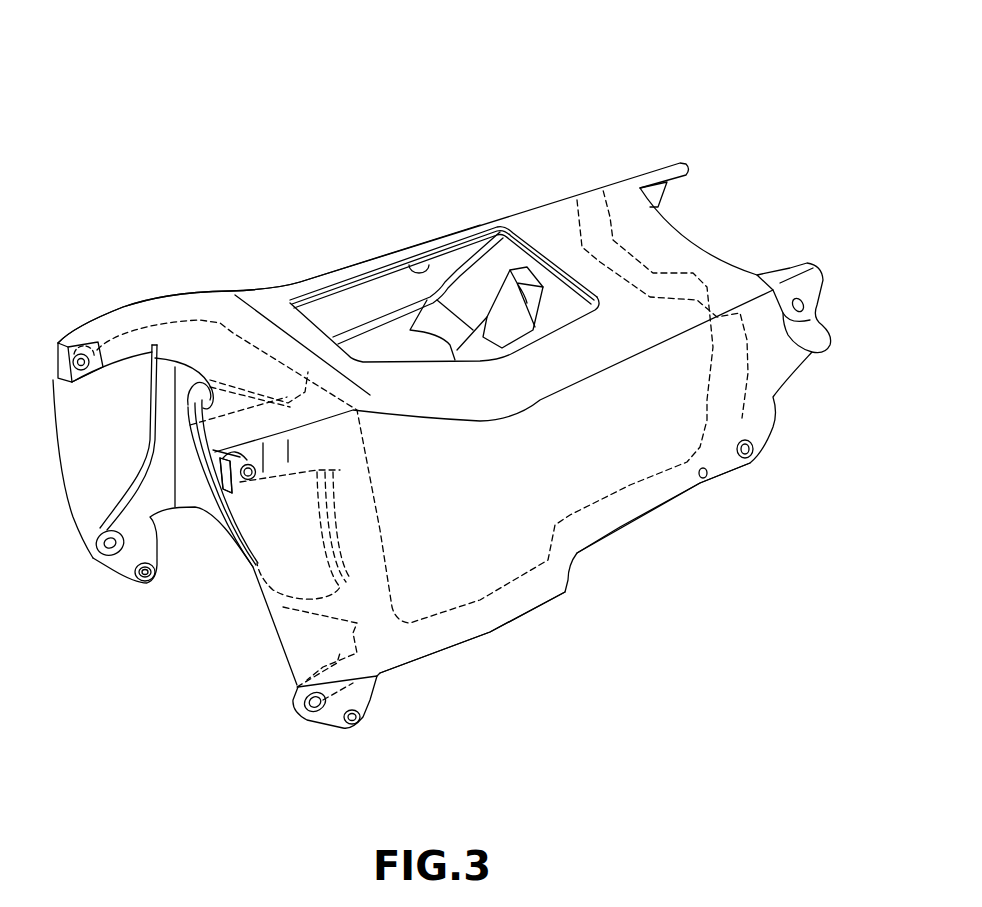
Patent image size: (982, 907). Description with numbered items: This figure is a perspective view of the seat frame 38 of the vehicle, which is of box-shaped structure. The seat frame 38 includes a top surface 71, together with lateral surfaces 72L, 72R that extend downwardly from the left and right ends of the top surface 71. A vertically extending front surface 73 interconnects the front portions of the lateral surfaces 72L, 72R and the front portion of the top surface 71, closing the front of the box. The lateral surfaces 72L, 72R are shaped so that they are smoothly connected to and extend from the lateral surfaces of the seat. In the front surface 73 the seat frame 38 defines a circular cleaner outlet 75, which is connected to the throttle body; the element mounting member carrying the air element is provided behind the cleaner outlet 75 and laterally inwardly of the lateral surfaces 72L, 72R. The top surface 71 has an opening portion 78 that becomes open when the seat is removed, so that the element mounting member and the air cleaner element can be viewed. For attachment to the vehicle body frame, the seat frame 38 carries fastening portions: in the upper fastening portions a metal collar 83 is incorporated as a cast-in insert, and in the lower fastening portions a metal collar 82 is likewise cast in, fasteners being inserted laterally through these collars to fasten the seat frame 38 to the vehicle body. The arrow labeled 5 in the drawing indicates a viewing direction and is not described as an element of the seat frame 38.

The seat frame 38 is at (438, 410).
The top surface 71 is at (545, 230).
The right lateral surface 72R is at (357, 272).
The left lateral surface 72L is at (607, 468).
The opening portion 78 is at (423, 262).
The metal collar 83 is at (87, 353).
The metal collar 82 is at (100, 550).
The front surface 73 is at (197, 505).
The cleaner outlet 75 is at (225, 508).
The view direction arrow 5 is at (272, 492).